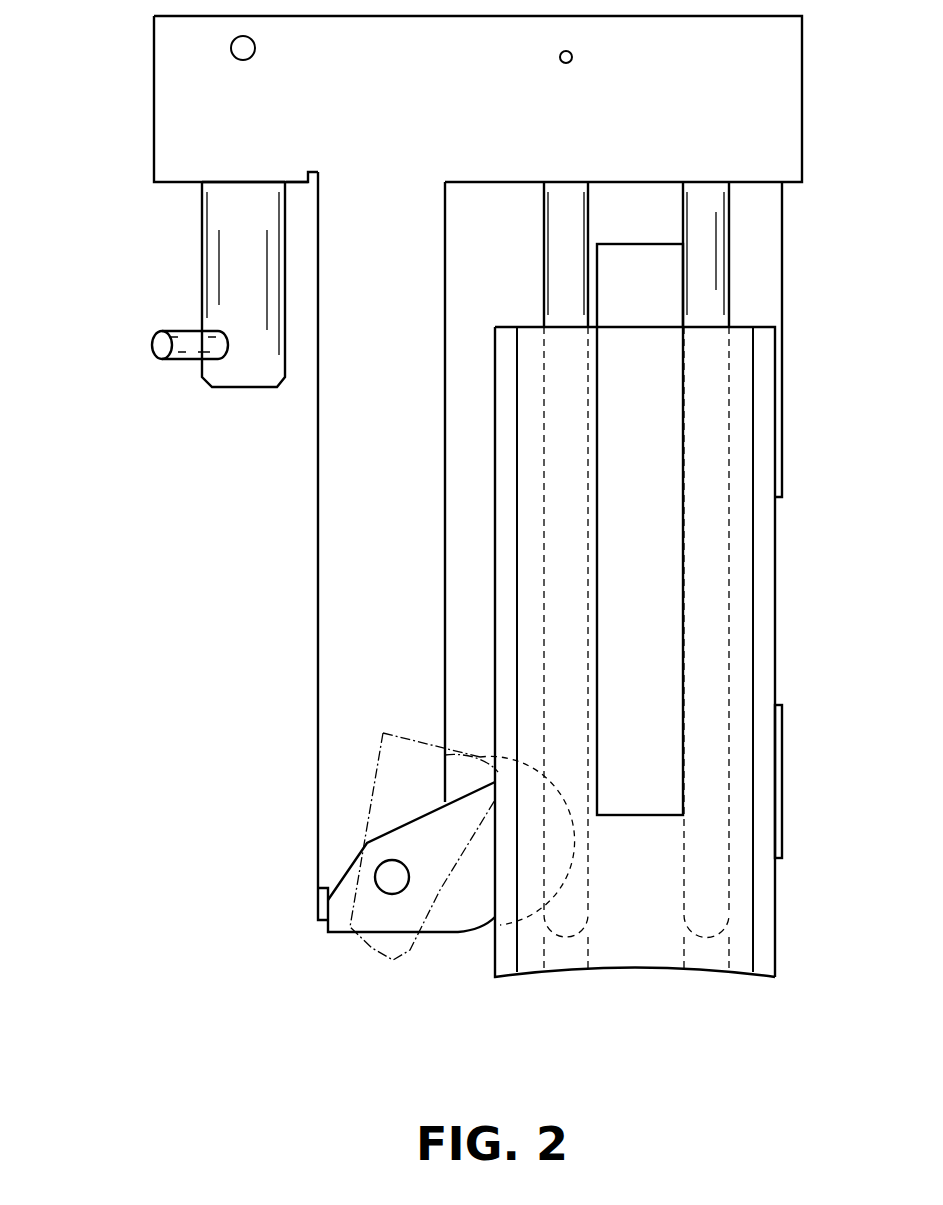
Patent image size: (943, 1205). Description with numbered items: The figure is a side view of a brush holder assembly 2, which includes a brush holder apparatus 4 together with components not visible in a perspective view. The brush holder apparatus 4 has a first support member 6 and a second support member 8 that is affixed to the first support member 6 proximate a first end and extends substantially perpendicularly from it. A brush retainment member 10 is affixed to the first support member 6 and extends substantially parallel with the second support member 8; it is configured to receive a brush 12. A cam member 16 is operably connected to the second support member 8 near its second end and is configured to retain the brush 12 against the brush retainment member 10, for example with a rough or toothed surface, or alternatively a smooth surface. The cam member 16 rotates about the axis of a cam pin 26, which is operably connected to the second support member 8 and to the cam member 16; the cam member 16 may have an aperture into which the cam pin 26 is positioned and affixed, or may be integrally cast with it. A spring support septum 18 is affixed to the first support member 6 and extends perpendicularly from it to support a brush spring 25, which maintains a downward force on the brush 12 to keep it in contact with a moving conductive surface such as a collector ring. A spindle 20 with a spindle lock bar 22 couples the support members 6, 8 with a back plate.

The brush holder assembly 2 is at (96, 264).
The brush holder apparatus 4 is at (213, 510).
The first support member 6 is at (449, 111).
The second support member 8 is at (369, 394).
The brush retainment member 10 is at (707, 252).
The brush 12 is at (638, 935).
The cam member 16 is at (342, 918).
The spring support septum 18 is at (757, 207).
The spindle 20 is at (235, 216).
The spindle lock bar 22 is at (180, 350).
The brush spring 25 is at (668, 288).
The cam pin 26 is at (405, 890).